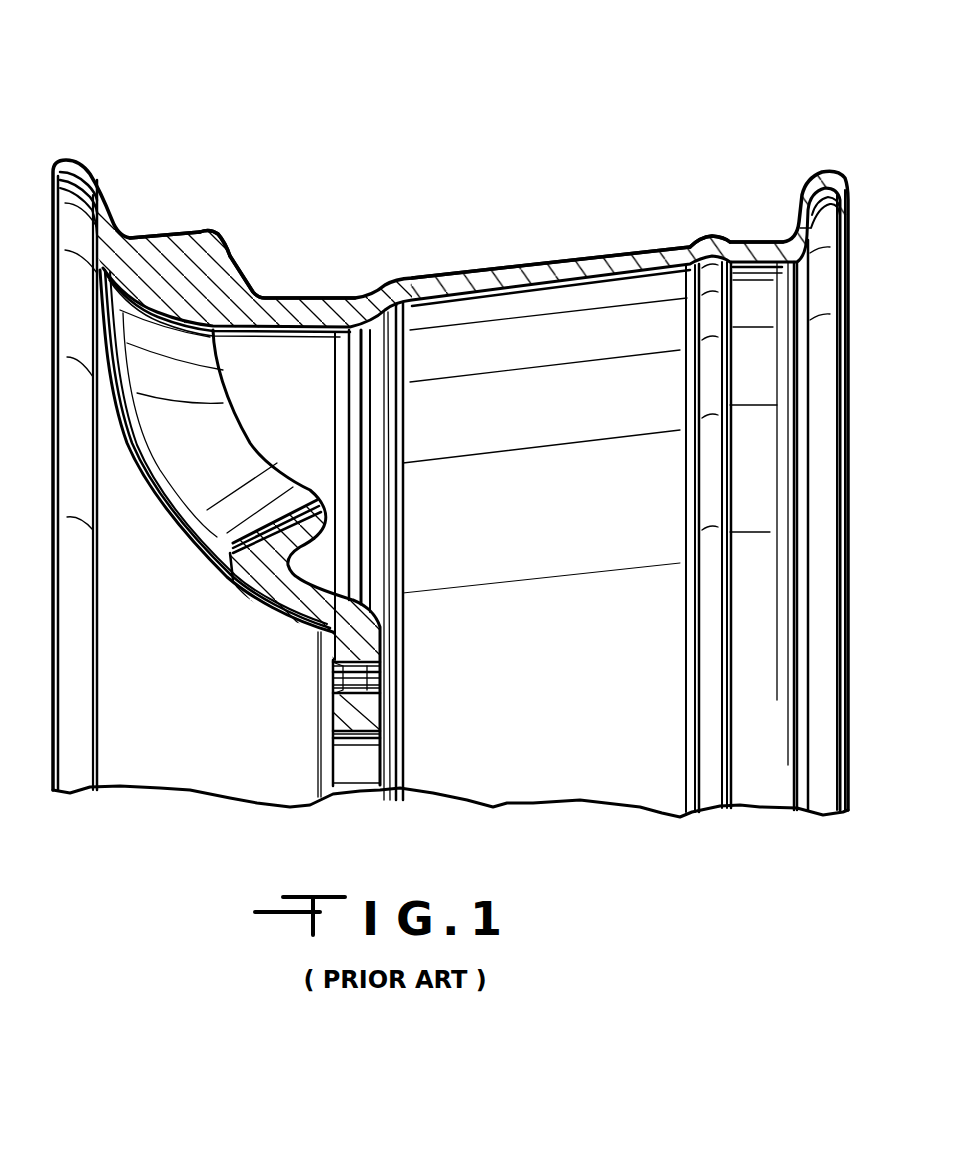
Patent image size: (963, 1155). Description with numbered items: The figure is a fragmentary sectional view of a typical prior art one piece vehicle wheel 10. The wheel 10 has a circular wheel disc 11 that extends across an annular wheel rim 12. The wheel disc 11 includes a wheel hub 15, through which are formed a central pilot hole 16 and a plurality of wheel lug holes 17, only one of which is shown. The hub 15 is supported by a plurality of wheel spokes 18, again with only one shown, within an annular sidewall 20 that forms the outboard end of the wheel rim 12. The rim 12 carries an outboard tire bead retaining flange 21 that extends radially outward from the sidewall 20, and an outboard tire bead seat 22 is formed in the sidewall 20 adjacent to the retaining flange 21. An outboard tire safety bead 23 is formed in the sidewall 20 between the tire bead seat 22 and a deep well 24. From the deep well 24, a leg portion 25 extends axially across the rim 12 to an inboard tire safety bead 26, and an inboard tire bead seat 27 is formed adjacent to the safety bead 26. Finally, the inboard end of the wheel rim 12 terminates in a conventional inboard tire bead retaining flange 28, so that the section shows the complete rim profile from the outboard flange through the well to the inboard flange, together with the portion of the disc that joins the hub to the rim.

The one piece wheel 10 is at (393, 183).
The wheel disc 11 is at (416, 628).
The wheel rim 12 is at (575, 252).
The wheel hub 15 is at (340, 633).
The central pilot hole 16 is at (366, 770).
The wheel lug hole 17 is at (366, 676).
The wheel spoke 18 is at (240, 463).
The annular sidewall 20 is at (192, 293).
The outboard tire bead retaining flange 21 is at (92, 180).
The outboard tire bead seat 22 is at (147, 235).
The outboard tire safety bead 23 is at (208, 243).
The deep well 24 is at (300, 307).
The leg portion 25 is at (520, 268).
The inboard tire safety bead 26 is at (703, 238).
The inboard tire bead seat 27 is at (747, 237).
The inboard tire bead retaining flange 28 is at (840, 220).